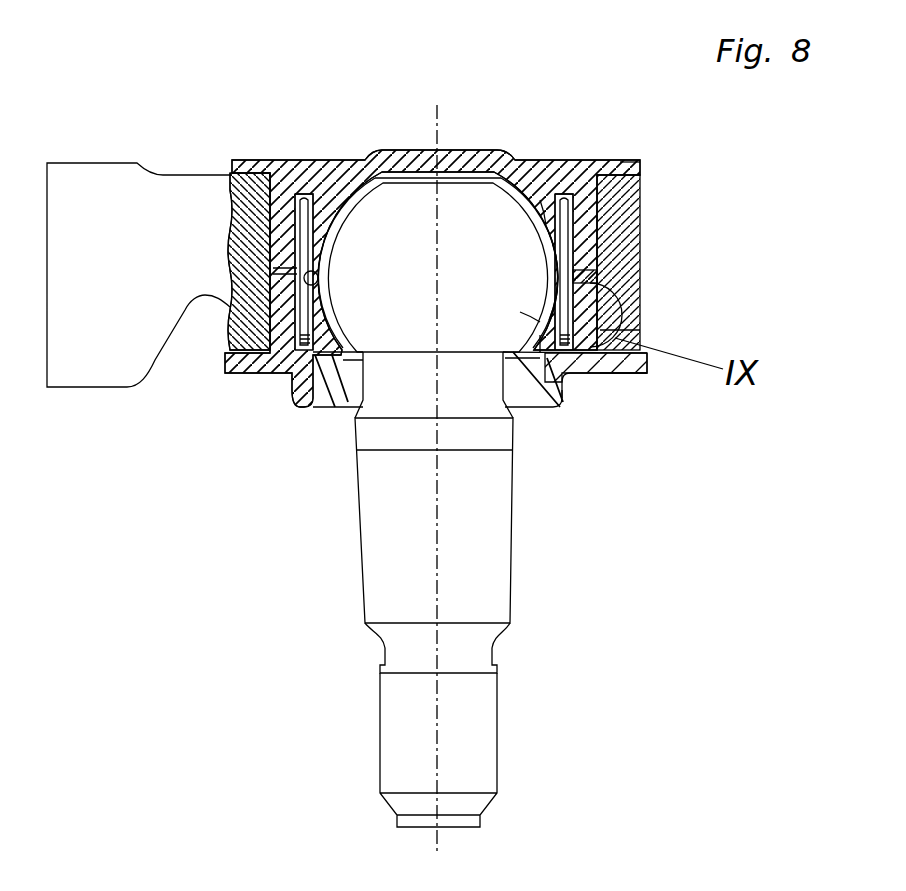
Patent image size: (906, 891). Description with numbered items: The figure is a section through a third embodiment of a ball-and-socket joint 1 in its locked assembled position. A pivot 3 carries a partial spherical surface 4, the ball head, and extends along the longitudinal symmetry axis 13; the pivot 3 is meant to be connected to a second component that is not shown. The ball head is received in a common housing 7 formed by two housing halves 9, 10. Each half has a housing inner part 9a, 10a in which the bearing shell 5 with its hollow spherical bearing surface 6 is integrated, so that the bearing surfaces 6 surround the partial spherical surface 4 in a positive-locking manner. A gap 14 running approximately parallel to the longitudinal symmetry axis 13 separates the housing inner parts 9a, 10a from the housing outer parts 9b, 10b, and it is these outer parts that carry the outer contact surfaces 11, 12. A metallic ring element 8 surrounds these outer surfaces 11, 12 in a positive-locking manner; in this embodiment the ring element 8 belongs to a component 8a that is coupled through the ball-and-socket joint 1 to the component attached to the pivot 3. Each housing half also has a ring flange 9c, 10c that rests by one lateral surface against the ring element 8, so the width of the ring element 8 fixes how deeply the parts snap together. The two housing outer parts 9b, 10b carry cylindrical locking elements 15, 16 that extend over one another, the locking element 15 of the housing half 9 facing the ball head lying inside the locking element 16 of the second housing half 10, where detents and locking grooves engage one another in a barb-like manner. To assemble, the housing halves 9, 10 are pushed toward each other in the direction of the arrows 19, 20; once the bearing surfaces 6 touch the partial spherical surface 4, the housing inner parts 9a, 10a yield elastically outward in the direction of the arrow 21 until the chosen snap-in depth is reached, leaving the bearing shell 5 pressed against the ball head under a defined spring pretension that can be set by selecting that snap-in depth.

The ball-and-socket joint 1 is at (354, 762).
The pivot 3 is at (385, 553).
The partial spherical surface 4 is at (345, 348).
The bearing shell 5 is at (549, 318).
The hollow spherical bearing surface 6 is at (537, 320).
The housing 7 is at (418, 146).
The ring element 8 is at (641, 190).
The component 8a is at (95, 372).
The housing half 9 is at (573, 156).
The housing inner part 9a is at (548, 213).
The housing outer part 9b is at (585, 210).
The ring flange 9c is at (632, 162).
The housing half 10 is at (579, 392).
The housing inner part 10a is at (535, 317).
The housing outer part 10b is at (575, 380).
The ring flange 10c is at (628, 372).
The outer surface 11 is at (600, 225).
The outer surface 12 is at (620, 332).
The longitudinal symmetry axis 13 is at (440, 594).
The gap 14 is at (305, 283).
The cylindrical locking element 15 is at (580, 270).
The cylindrical locking element 16 is at (600, 287).
The arrow 19 is at (222, 60).
The arrow 20 is at (237, 724).
The arrow 21 is at (306, 282).